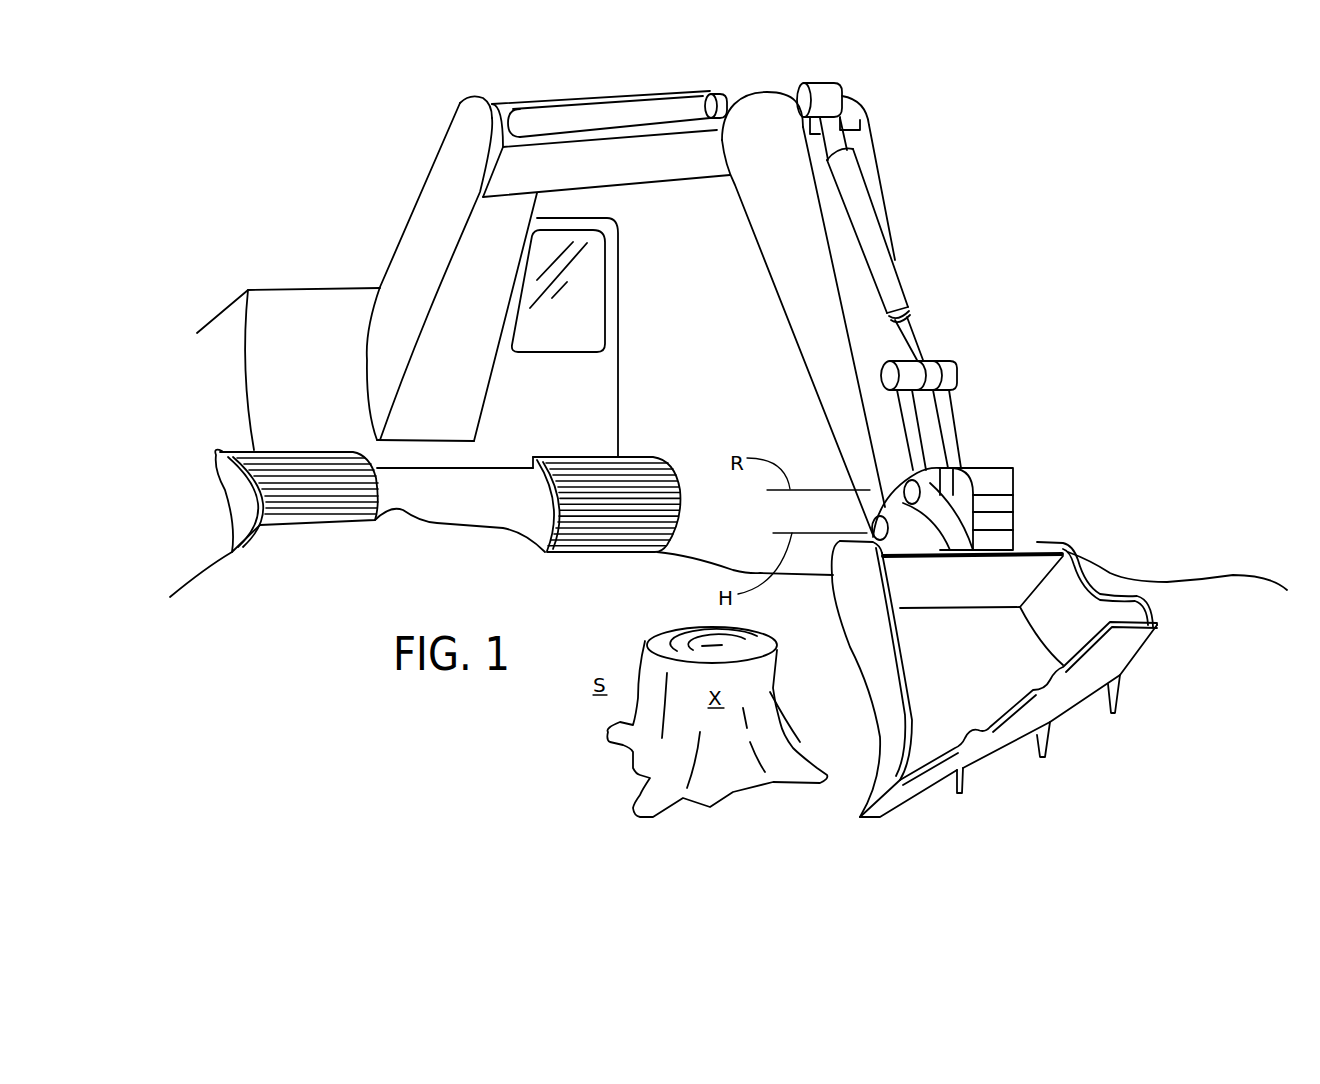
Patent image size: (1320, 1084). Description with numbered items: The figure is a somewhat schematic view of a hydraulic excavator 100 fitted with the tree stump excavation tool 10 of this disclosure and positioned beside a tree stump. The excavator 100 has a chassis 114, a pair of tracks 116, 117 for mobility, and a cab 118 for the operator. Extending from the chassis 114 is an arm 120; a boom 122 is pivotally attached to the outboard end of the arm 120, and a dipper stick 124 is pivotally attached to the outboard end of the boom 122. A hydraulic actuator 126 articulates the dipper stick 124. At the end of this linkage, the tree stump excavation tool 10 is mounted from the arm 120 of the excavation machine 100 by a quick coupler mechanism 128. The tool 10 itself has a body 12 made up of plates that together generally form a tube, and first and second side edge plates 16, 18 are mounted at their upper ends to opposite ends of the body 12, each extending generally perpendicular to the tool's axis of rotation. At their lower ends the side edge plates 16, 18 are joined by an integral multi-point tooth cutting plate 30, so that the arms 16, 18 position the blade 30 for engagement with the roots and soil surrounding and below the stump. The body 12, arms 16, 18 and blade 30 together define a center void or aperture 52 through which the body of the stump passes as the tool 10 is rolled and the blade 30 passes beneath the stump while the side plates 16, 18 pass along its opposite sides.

The hydraulic excavator 100 is at (985, 230).
The chassis 114 is at (286, 310).
The track 116 is at (333, 506).
The track 117 is at (670, 473).
The cab 118 is at (587, 308).
The arm 120 is at (453, 153).
The boom 122 is at (571, 160).
The dipper stick 124 is at (793, 197).
The hydraulic actuator 126 is at (676, 103).
The quick coupler mechanism 128 is at (870, 505).
The tree stump excavation tool 10 is at (1053, 777).
The body 12 is at (1022, 578).
The first side edge plate 16 is at (1087, 593).
The second side edge plate 18 is at (890, 710).
The cutting plate 30 is at (1133, 655).
The center void or aperture 52 is at (995, 668).